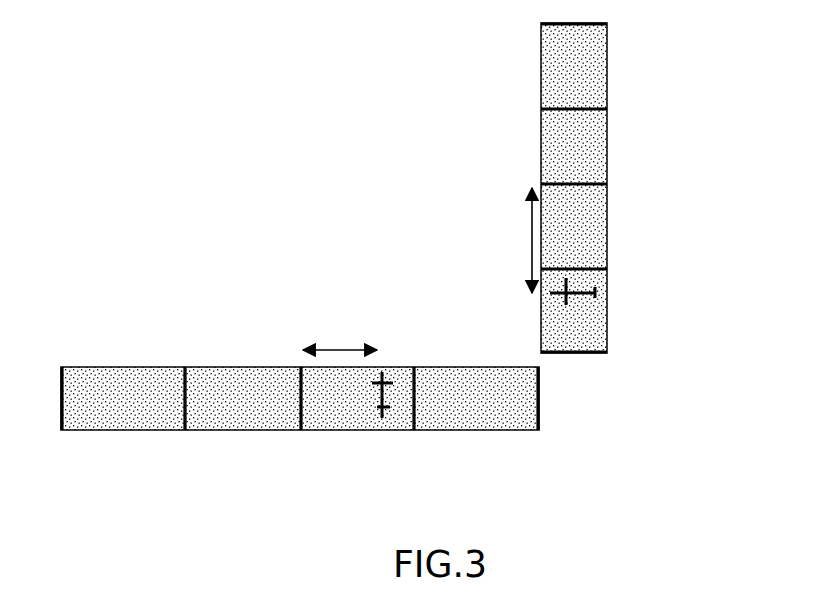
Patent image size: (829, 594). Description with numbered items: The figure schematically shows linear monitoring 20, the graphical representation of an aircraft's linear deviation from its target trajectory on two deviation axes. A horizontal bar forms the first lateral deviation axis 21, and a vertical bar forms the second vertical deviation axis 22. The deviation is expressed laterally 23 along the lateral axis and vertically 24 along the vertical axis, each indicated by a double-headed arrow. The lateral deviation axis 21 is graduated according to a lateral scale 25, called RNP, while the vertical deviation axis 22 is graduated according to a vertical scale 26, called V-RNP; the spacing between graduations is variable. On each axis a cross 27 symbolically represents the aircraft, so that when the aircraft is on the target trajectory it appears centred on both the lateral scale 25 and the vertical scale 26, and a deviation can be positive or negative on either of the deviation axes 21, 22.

The linear monitoring 20 is at (275, 110).
The lateral deviation axis 21 is at (339, 444).
The vertical deviation axis 22 is at (662, 192).
The lateral expression of deviation 23 is at (342, 345).
The vertical expression of deviation 24 is at (530, 240).
The lateral scale 25 is at (560, 462).
The vertical scale 26 is at (693, 290).
The cross 27 is at (396, 380).